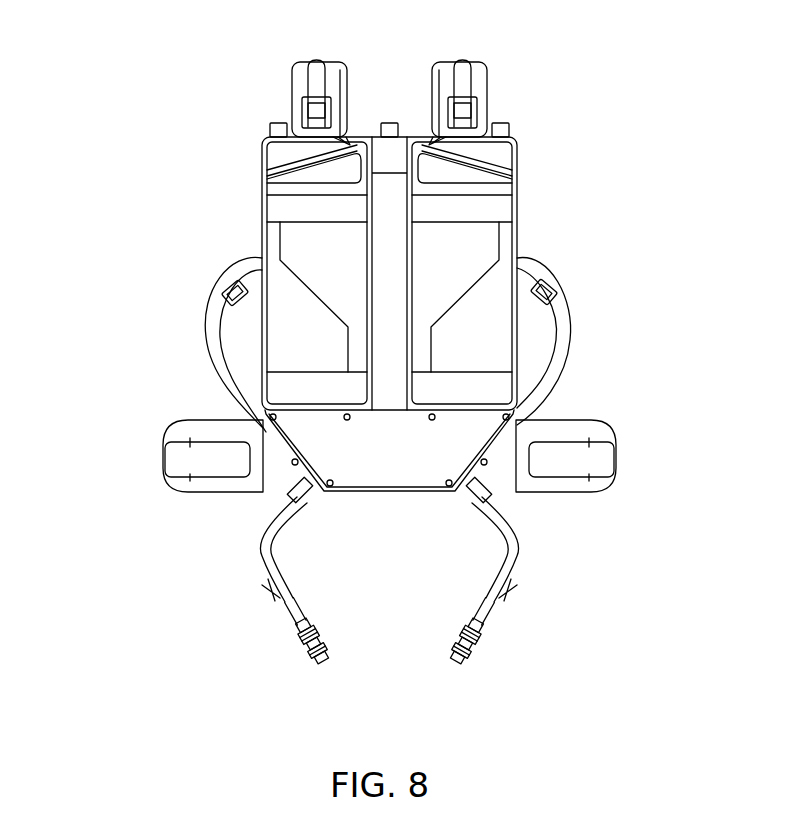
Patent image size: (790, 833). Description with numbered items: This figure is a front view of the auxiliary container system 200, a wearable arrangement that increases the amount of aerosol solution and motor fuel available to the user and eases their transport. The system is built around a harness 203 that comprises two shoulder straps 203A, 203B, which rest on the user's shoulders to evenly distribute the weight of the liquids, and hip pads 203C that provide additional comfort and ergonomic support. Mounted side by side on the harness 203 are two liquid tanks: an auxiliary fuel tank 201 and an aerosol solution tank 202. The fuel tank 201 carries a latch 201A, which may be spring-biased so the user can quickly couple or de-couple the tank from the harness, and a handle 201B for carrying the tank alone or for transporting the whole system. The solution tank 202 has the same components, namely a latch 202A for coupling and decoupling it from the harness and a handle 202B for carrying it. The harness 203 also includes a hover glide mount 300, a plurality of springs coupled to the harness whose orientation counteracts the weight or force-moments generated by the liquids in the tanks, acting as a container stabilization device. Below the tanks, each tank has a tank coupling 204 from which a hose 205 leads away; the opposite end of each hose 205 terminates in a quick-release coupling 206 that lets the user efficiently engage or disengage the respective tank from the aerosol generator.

The auxiliary container system 200 is at (146, 76).
The hover glide mount 300 is at (262, 142).
The auxiliary fuel tank 201 is at (272, 318).
The latch 201A is at (341, 137).
The handle 201B is at (267, 173).
The aerosol solution tank 202 is at (482, 245).
The latch 202A is at (437, 133).
The handle 202B is at (518, 170).
The harness 203 is at (303, 60).
The strap 203A is at (218, 367).
The strap 203B is at (563, 330).
The hip pads 203C is at (185, 423).
The tank coupling 204 is at (480, 497).
The hose 205 is at (497, 590).
The quick-release coupling 206 is at (325, 665).